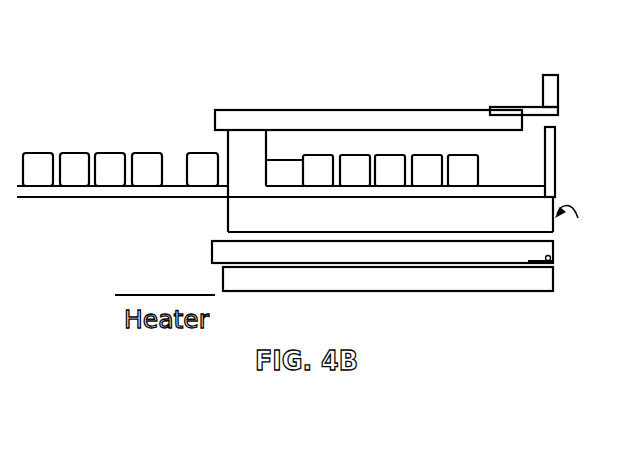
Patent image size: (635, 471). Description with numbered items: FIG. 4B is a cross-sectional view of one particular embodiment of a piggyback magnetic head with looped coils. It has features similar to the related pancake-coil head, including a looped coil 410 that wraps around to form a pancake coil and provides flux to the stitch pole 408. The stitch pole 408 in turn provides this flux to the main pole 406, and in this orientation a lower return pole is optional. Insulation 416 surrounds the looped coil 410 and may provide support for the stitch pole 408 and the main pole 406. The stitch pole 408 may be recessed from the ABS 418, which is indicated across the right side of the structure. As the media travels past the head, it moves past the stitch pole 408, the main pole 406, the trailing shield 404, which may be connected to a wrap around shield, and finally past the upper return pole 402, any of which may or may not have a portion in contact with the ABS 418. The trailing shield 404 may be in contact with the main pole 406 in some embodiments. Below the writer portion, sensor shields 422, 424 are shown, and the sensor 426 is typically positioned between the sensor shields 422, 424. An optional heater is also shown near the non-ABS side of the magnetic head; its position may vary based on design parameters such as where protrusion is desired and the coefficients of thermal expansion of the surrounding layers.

The upper return pole 402 is at (558, 91).
The trailing shield 404 is at (556, 170).
The main pole 406 is at (527, 107).
The stitch pole 408 is at (393, 110).
The looped coil 410 is at (462, 155).
The insulation 416 is at (390, 214).
The ABS 418 is at (578, 223).
The sensor shield 422 is at (212, 252).
The sensor shield 424 is at (223, 275).
The sensor 426 is at (554, 262).